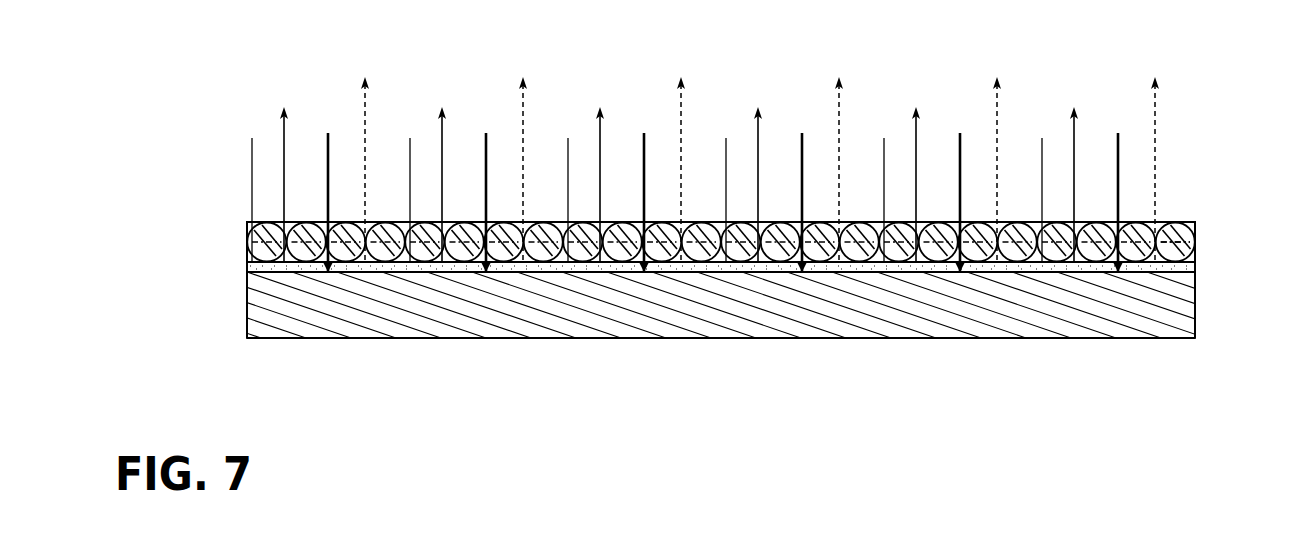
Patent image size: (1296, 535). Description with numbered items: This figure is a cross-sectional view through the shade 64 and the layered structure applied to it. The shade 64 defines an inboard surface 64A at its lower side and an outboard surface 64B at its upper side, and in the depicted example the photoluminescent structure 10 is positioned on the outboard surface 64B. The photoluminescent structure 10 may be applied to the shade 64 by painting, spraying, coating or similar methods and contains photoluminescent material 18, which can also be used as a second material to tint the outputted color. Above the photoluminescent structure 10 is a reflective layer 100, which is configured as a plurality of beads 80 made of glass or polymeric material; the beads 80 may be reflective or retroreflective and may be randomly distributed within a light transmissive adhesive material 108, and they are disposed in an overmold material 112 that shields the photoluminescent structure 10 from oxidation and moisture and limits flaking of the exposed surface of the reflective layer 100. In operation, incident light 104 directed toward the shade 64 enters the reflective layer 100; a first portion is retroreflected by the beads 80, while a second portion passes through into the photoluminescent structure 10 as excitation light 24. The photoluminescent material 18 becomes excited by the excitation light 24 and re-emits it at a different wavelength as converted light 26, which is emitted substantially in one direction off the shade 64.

The photoluminescent structure 10 is at (247, 265).
The photoluminescent material 18 is at (247, 260).
The excitation light 24 is at (329, 148).
The converted light 26 is at (367, 127).
The shade 64 is at (1167, 328).
The inboard surface 64A is at (793, 339).
The outboard surface 64B is at (1053, 273).
The beads 80 is at (1170, 222).
The reflective layer 100 is at (759, 194).
The incident light 104 is at (443, 140).
The light transmissive adhesive material 108 is at (1195, 262).
The overmold material 112 is at (1192, 222).